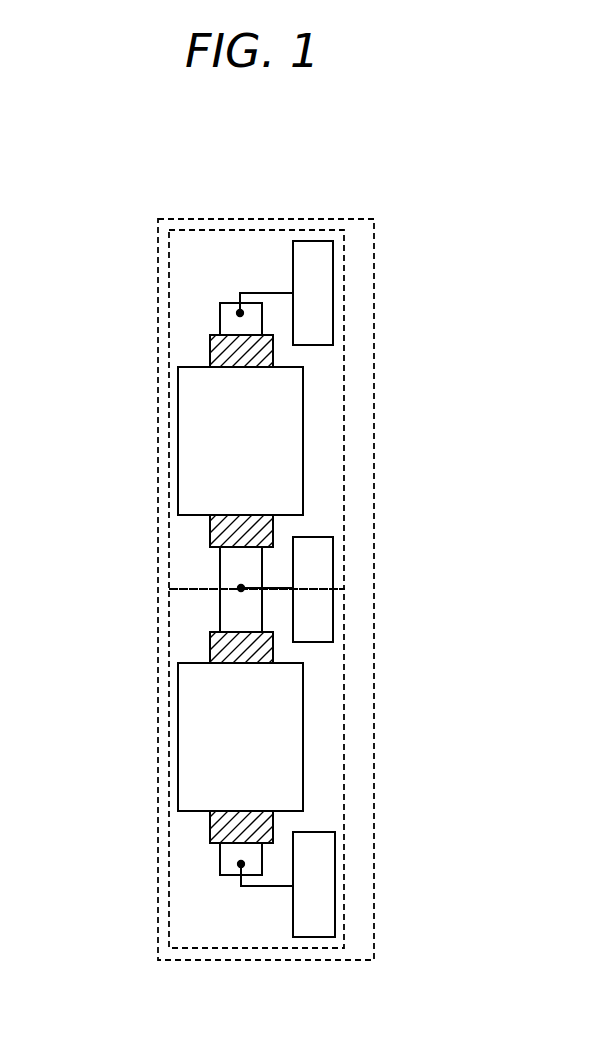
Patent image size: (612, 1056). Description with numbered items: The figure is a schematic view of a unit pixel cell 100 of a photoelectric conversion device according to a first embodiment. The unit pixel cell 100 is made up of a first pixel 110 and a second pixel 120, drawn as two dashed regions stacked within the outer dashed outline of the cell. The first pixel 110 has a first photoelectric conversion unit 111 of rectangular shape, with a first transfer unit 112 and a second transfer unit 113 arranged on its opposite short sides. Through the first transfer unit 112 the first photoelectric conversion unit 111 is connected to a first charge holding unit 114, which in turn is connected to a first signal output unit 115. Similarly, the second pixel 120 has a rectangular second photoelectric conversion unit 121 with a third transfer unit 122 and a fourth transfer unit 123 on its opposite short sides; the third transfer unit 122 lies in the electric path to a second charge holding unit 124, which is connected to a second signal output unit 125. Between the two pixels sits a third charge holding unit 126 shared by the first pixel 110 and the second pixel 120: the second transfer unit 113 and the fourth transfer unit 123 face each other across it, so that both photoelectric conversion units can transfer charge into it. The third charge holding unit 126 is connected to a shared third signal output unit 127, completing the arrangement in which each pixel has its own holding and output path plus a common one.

The unit pixel cell 100 is at (210, 219).
The first pixel 110 is at (344, 436).
The first photoelectric conversion unit 111 is at (207, 438).
The first transfer unit 112 is at (210, 358).
The second transfer unit 113 is at (215, 536).
The first charge holding unit 114 is at (220, 325).
The first signal output unit 115 is at (323, 283).
The second pixel 120 is at (344, 732).
The second photoelectric conversion unit 121 is at (207, 729).
The third transfer unit 122 is at (213, 829).
The fourth transfer unit 123 is at (215, 653).
The second charge holding unit 124 is at (230, 863).
The second signal output unit 125 is at (323, 900).
The third charge holding unit 126 is at (230, 577).
The third signal output unit 127 is at (323, 571).